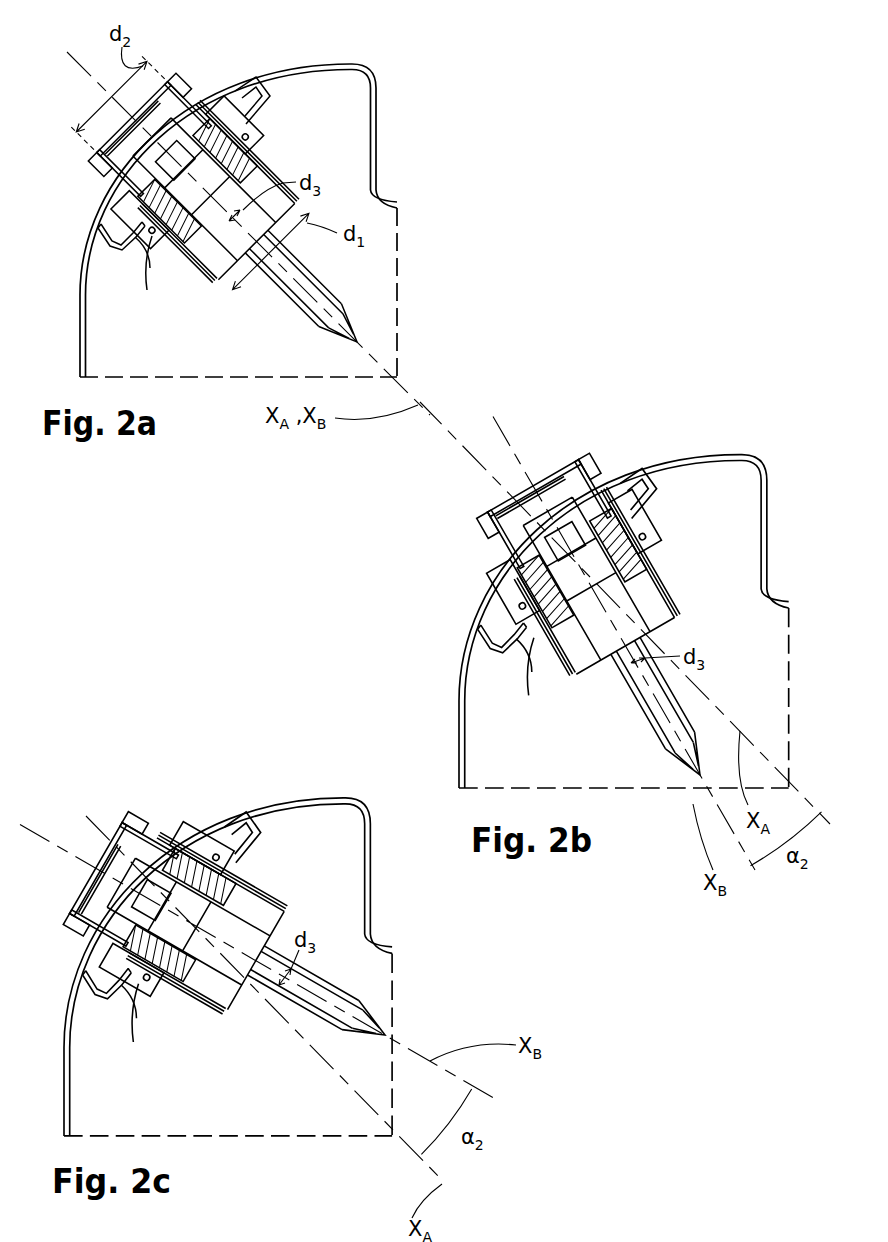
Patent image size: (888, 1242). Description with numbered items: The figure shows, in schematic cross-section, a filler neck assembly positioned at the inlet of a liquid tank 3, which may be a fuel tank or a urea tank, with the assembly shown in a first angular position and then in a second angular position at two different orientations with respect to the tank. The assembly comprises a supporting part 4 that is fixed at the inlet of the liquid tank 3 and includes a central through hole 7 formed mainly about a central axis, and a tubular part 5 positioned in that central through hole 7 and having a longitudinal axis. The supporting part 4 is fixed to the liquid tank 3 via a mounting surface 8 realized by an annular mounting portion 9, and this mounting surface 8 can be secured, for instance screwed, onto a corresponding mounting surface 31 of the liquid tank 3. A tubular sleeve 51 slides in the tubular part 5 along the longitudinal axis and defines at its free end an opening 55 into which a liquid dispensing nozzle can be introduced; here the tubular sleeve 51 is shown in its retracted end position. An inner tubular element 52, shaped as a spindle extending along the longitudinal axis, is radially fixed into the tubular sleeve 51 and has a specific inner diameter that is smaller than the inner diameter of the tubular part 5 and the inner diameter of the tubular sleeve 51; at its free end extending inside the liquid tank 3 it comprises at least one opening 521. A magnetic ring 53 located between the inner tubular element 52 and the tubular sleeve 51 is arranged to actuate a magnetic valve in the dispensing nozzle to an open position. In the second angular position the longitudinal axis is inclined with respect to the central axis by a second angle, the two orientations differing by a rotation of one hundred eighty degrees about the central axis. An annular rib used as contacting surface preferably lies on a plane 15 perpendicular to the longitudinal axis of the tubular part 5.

In FIG. 2A, the liquid tank 3 is at (323, 113).
In FIG. 2B, the liquid tank 3 is at (721, 476).
In FIG. 2C, the liquid tank 3 is at (313, 824).
In FIG. 2A, the supporting part 4 is at (253, 147).
In FIG. 2B, the supporting part 4 is at (641, 536).
In FIG. 2C, the supporting part 4 is at (247, 877).
In FIG. 2A, the tubular part 5 is at (273, 162).
In FIG. 2B, the tubular part 5 is at (647, 556).
In FIG. 2C, the tubular part 5 is at (259, 893).
In FIG. 2A, the central through hole 7 is at (227, 127).
In FIG. 2B, the central through hole 7 is at (607, 507).
In FIG. 2C, the central through hole 7 is at (155, 973).
In FIG. 2A, the mounting surface 8 is at (252, 117).
In FIG. 2A, the annular mounting portion 9 is at (102, 220).
In FIG. 2B, the annular mounting portion 9 is at (504, 613).
In FIG. 2C, the annular mounting portion 9 is at (90, 963).
In FIG. 2A, the plane 15 is at (148, 276).
In FIG. 2A, the mounting surface of the liquid tank 31 is at (130, 265).
In FIG. 2B, the mounting surface of the liquid tank 31 is at (520, 660).
In FIG. 2C, the mounting surface of the liquid tank 31 is at (120, 1005).
In FIG. 2A, the tubular sleeve 51 is at (105, 128).
In FIG. 2C, the tubular sleeve 51 is at (106, 893).
In FIG. 2A, the inner tubular element 52 is at (310, 265).
In FIG. 2B, the inner tubular element 52 is at (654, 722).
In FIG. 2C, the inner tubular element 52 is at (317, 961).
In FIG. 2A, the magnetic ring 53 is at (140, 203).
In FIG. 2B, the magnetic ring 53 is at (525, 579).
In FIG. 2C, the magnetic ring 53 is at (197, 861).
In FIG. 2A, the opening 55 is at (143, 87).
In FIG. 2A, the opening 521 is at (353, 313).
In FIG. 2B, the opening 521 is at (678, 761).
In FIG. 2C, the opening 521 is at (379, 1009).